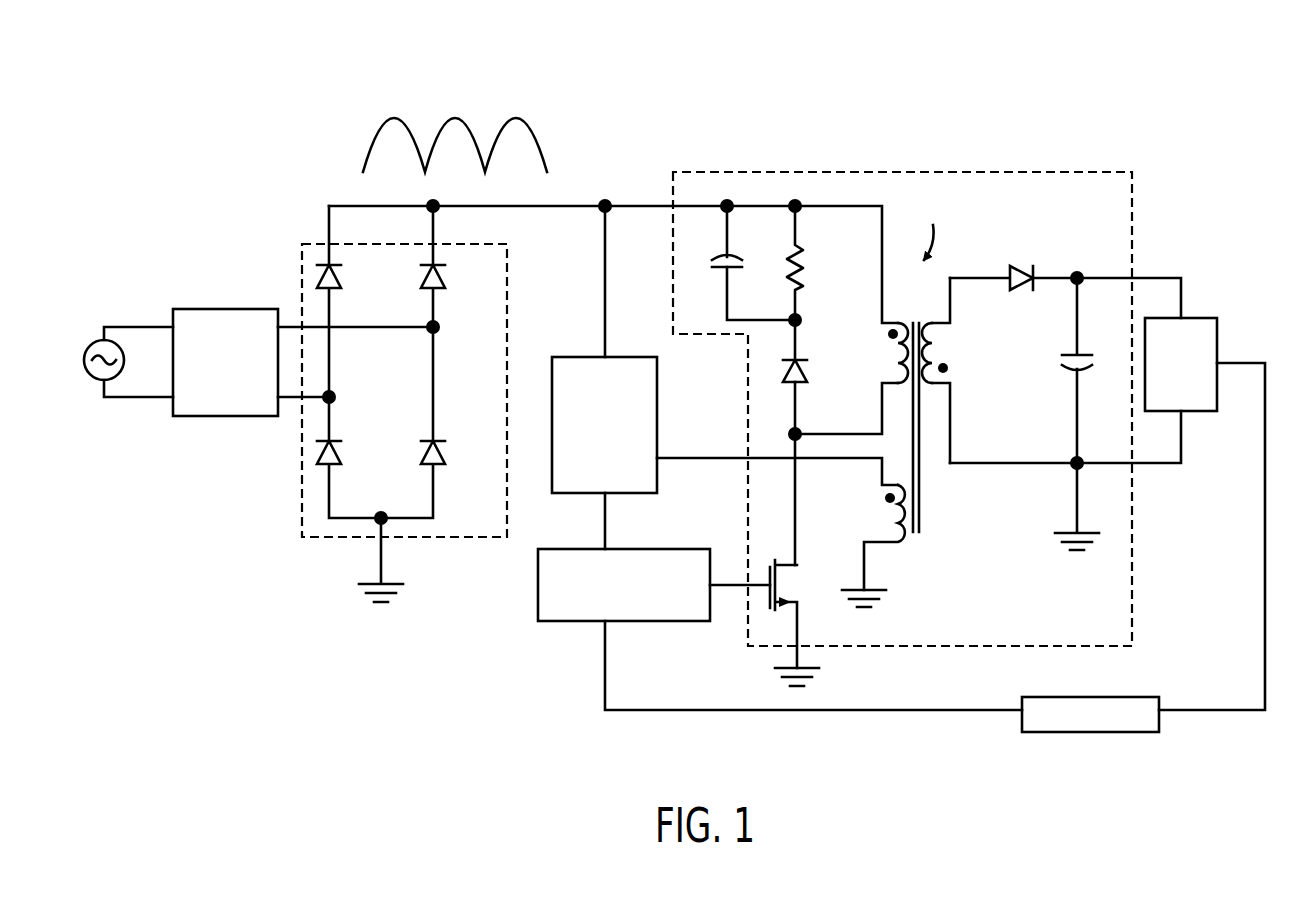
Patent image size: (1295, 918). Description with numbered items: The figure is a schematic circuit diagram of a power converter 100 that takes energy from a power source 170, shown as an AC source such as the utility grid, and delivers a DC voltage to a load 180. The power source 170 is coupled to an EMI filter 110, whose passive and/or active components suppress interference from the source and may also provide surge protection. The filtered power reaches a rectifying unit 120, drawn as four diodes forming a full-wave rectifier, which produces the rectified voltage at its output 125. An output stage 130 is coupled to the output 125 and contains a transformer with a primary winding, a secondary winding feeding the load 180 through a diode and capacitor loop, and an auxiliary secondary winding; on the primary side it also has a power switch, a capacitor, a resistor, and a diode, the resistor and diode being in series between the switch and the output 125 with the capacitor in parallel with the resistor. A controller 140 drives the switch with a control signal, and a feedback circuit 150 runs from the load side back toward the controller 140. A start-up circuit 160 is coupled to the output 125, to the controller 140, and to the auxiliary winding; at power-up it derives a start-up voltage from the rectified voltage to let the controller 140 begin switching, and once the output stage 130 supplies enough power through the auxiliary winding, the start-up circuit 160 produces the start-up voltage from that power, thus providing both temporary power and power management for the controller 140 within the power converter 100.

The power converter 100 is at (1191, 100).
The electromagnetic interference (EMI) filter 110 is at (226, 309).
The rectifying unit 120 is at (314, 242).
The output of the rectifying unit 125 is at (605, 199).
The output stage 130 is at (997, 172).
The controller 140 is at (572, 623).
The feedback circuit 150 is at (1092, 733).
The start-up circuit 160 is at (658, 421).
The power source 170 is at (90, 346).
The load 180 is at (1197, 317).